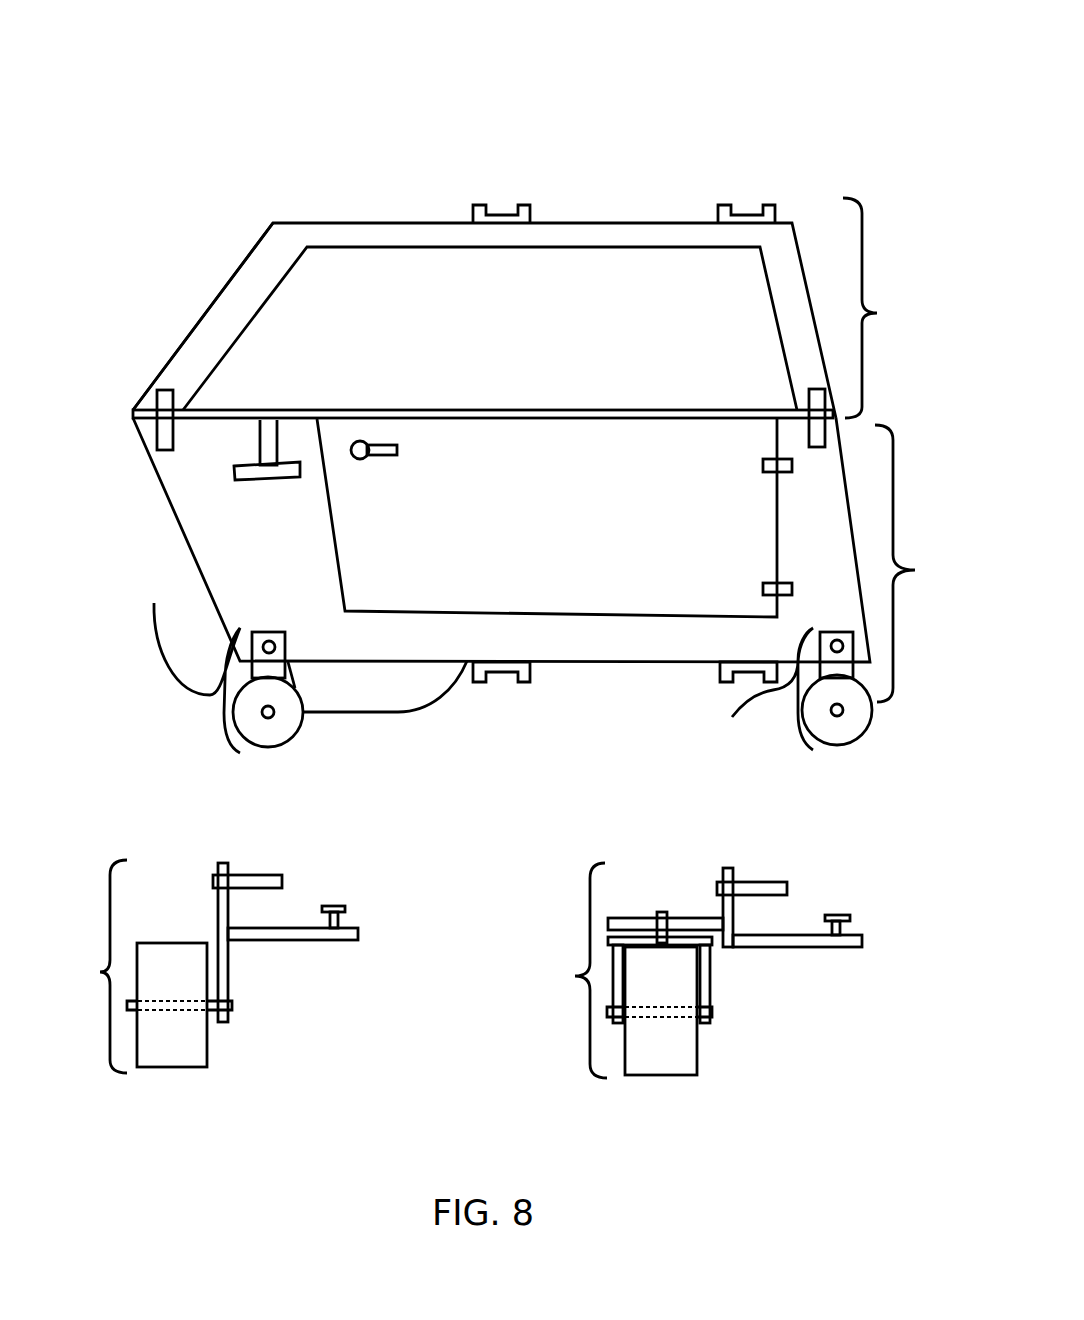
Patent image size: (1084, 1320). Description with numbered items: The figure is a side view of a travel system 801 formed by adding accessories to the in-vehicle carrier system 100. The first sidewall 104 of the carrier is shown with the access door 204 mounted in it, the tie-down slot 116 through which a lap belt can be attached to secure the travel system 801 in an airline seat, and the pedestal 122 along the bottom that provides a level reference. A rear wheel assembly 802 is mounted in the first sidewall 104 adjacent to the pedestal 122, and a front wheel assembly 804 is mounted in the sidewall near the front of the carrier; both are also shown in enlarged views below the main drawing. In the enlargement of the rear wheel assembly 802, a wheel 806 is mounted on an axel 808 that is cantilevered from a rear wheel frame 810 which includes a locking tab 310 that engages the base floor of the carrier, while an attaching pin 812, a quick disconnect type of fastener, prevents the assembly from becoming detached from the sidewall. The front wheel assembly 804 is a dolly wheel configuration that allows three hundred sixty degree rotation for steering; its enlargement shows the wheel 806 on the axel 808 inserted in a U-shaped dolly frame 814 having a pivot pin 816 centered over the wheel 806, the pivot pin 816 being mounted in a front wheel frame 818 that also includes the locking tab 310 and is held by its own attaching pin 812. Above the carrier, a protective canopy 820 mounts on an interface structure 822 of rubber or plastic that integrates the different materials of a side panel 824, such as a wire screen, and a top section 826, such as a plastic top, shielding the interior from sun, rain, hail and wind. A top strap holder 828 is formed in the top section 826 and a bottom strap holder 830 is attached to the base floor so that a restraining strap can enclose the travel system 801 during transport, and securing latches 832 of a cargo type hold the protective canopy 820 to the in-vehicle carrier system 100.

The in-vehicle carrier system 100 is at (920, 563).
The first sidewall 104 is at (364, 643).
The tie-down slot 116 is at (263, 480).
The pedestal 122 is at (377, 693).
The access door 204 is at (670, 583).
The locking tab 310 is at (333, 907).
The travel system 801 is at (240, 45).
The rear wheel assembly 802 is at (100, 972).
The front wheel assembly 804 is at (575, 976).
The wheel 806 is at (172, 1050).
The axel 808 is at (210, 1010).
The rear wheel frame 810 is at (267, 933).
The attaching pin 812 is at (248, 880).
The dolly frame 814 is at (707, 967).
The pivot pin 816 is at (660, 910).
The front wheel frame 818 is at (820, 942).
The protective canopy 820 is at (877, 313).
The interface structure 822 is at (143, 416).
The side panel 824 is at (457, 323).
The top section 826 is at (258, 265).
The top strap holder 828 is at (482, 212).
The bottom strap holder 830 is at (525, 673).
The securing latches 832 is at (163, 428).